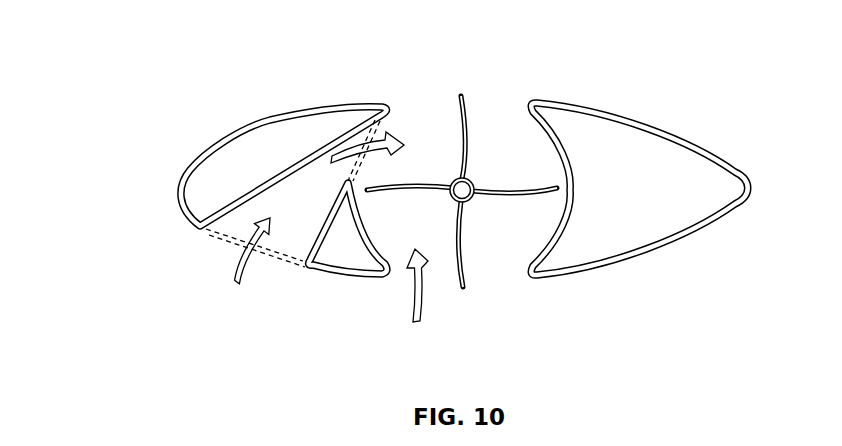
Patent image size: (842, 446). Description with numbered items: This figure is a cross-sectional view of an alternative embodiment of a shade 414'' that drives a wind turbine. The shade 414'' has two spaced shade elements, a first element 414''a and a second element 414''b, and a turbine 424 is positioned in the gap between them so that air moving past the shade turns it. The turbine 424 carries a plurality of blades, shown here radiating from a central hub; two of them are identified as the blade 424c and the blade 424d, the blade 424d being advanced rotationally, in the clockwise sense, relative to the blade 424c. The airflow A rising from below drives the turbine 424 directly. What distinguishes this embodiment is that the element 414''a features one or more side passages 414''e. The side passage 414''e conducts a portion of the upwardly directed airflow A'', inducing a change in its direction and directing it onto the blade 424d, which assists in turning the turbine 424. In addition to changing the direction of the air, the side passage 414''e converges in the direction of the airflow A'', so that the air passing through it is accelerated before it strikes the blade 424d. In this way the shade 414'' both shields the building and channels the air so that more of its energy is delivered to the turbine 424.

The shade 414'' is at (412, 183).
The shade element 414''a is at (278, 155).
The shade element 414''b is at (651, 186).
The side passage 414''e is at (201, 255).
The turbine 424 is at (490, 153).
The blade 424c is at (431, 177).
The blade 424d is at (470, 128).
The airflow A is at (404, 306).
The airflow A'' is at (257, 279).